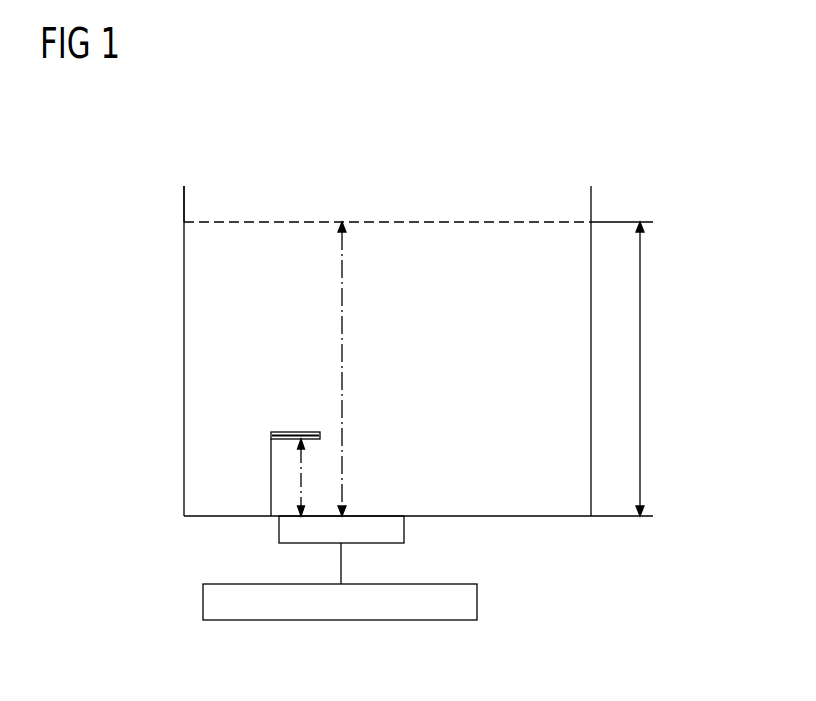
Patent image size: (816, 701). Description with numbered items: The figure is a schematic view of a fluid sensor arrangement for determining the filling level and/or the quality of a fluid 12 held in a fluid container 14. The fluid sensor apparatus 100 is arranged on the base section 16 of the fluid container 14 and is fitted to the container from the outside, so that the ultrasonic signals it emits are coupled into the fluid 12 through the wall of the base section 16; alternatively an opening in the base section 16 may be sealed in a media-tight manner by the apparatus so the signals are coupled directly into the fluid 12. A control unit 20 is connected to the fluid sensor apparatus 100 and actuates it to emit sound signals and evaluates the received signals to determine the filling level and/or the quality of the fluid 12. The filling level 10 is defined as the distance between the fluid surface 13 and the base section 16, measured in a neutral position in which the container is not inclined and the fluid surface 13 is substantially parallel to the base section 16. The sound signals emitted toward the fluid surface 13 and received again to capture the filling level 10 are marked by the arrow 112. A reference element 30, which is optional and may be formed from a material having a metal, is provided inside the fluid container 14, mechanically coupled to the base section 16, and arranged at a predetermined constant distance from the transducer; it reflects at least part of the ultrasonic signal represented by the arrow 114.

The filling level 10 is at (640, 370).
The fluid 12 is at (198, 296).
The fluid surface 13 is at (454, 222).
The fluid container 14 is at (184, 203).
The base section 16 is at (194, 518).
The control unit 20 is at (477, 600).
The reference element 30 is at (293, 432).
The fluid sensor apparatus 100 is at (428, 532).
The arrow 112 is at (342, 335).
The arrow 114 is at (301, 490).